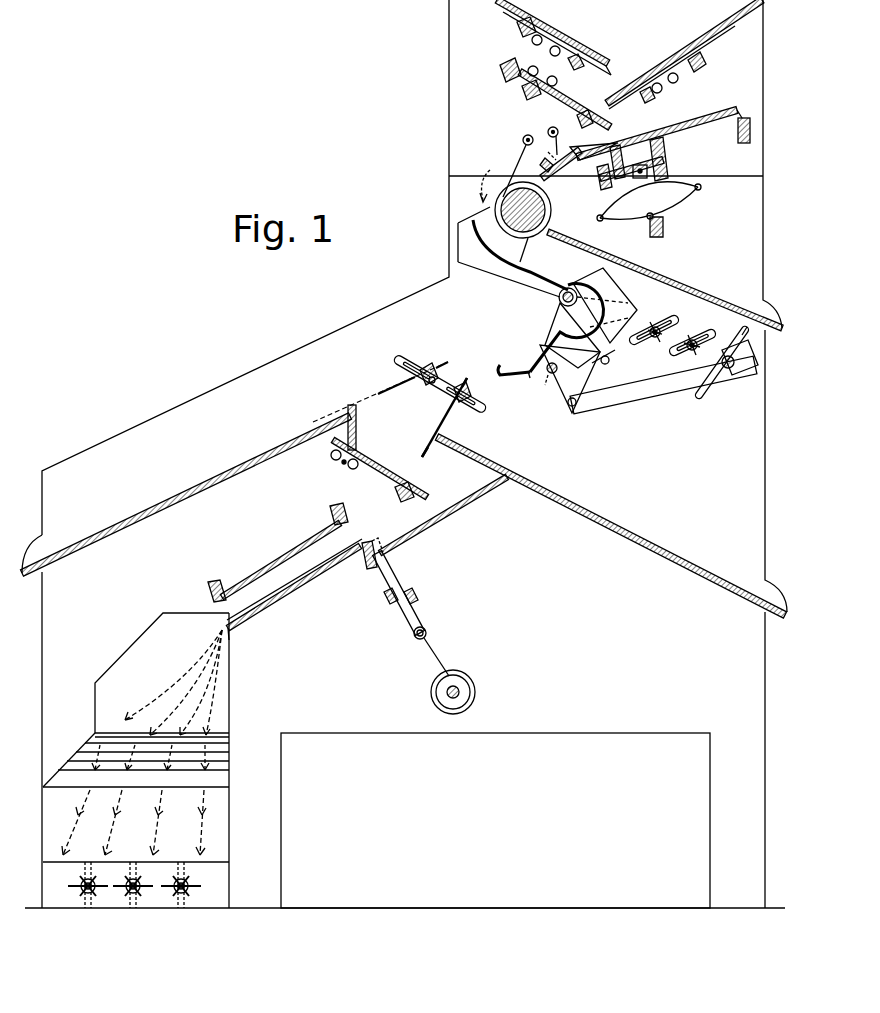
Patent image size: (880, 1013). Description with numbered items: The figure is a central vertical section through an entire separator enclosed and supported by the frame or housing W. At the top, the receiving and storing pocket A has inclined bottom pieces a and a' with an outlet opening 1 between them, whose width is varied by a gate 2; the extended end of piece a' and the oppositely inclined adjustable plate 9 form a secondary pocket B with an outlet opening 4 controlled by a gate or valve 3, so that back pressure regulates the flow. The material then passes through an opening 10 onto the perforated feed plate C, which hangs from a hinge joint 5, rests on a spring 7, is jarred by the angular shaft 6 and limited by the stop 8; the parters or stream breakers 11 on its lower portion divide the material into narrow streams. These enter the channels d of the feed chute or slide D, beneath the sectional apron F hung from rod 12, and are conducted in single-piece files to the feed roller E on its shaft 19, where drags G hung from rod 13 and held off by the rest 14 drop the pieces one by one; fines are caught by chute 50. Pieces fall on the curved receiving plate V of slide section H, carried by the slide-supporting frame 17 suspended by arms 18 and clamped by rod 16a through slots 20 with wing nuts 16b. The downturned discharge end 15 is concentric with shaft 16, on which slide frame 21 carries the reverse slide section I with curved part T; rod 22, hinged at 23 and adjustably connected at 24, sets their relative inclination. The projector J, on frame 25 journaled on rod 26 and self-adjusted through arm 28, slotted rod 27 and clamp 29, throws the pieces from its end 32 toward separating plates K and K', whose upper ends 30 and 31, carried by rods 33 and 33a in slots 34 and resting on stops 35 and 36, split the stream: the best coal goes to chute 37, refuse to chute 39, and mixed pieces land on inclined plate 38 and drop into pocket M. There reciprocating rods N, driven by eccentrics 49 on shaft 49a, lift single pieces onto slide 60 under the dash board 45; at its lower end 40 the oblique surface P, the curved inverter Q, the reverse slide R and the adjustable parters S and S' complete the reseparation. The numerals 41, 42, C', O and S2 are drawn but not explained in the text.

The receiving and storing pocket A is at (606, 96).
The bottom piece a is at (553, 37).
The bottom piece a' is at (684, 54).
The outlet opening 1 is at (613, 74).
The gate 2 is at (583, 67).
The gate or valve 3 is at (639, 98).
The outlet opening 4 is at (590, 113).
The hinge joint 5 is at (743, 120).
The angular shaft 6 is at (638, 163).
The spring 7 is at (649, 209).
The stop 8 is at (600, 182).
The adjustable plate 9 is at (556, 94).
The outlet opening 10 is at (631, 153).
The parters or stream breakers 11 is at (605, 152).
The rod 12 is at (547, 135).
The rod 13 is at (518, 160).
The stop or rest 14 is at (541, 159).
The discharge end 15 is at (578, 299).
The horizontal shaft 16 is at (559, 306).
The rod 16a is at (742, 357).
The wing nuts 16b is at (734, 326).
The slide-supporting frame 17 is at (509, 279).
The arms 18 is at (517, 250).
The shaft 19 is at (523, 210).
The slots 20 is at (722, 362).
The slide frame 21 is at (602, 321).
The rod 22 is at (649, 335).
The hinge connection 23 is at (598, 362).
The adjustable connection 24 is at (656, 323).
The projector frame 25 is at (559, 379).
The rod 26 is at (546, 386).
The slotted adjusting rod 27 is at (663, 385).
The arm 28 is at (581, 410).
The clamp 29 is at (692, 337).
The upper end 30 is at (445, 357).
The upper end 31 is at (463, 373).
The end 32 is at (505, 363).
The rod 33 is at (421, 379).
The rod 33a is at (474, 390).
The slots 34 is at (418, 358).
The fixed stop 35 is at (362, 427).
The fixed stop 36 is at (443, 440).
The chute 37 is at (186, 494).
The inclined plate 38 is at (380, 469).
The chute 39 is at (610, 526).
The lower end 40 is at (216, 627).
The hopper side wall 41 is at (241, 760).
The hopper slope 42 is at (69, 743).
The shield or dash board 45 is at (270, 570).
The eccentrics 49 is at (469, 692).
The shaft 49a is at (465, 657).
The chute 50 is at (665, 280).
The slide 60 is at (293, 587).
The secondary pocket B is at (554, 83).
The feed plate C is at (657, 132).
The bar wall C' is at (672, 159).
The feed chute or slide D is at (561, 173).
The feed roller E is at (533, 210).
The sectional apron or strick F is at (588, 145).
The drags G is at (495, 174).
The differentiating slide section H is at (566, 312).
The secondary slide section I is at (572, 335).
The projector J is at (514, 357).
The separating plate K is at (380, 392).
The separating plate K' is at (444, 417).
The receiving pocket M is at (435, 521).
The reciprocating rods N is at (394, 595).
The chute O is at (303, 583).
The declivous surface P is at (162, 674).
The curved inverter Q is at (148, 760).
The reverse slide R is at (147, 826).
The parter or partition S is at (181, 901).
The parter or partition S' is at (133, 901).
The fan S2 is at (88, 901).
The curved part T is at (605, 305).
The curved receiving and deflecting plate V is at (513, 248).
The frame or housing W is at (404, 454).
The channels d is at (547, 163).